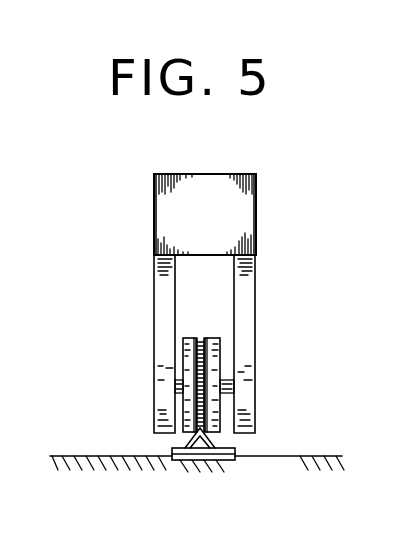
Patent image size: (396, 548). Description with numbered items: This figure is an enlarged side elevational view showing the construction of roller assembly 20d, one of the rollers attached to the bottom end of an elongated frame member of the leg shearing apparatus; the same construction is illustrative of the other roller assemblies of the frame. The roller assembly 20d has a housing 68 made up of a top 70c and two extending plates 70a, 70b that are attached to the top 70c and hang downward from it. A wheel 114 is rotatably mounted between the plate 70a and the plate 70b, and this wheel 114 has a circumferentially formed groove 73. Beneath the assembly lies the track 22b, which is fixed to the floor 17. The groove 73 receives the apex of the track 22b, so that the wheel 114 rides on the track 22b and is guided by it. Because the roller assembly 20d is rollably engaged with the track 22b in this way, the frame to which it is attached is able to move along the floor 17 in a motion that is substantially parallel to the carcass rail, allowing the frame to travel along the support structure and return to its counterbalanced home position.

The floor 17 is at (300, 452).
The roller assembly 20d is at (274, 258).
The track 22b is at (197, 457).
The housing 68 is at (256, 206).
The extending plate 70a is at (157, 313).
The extending plate 70b is at (245, 303).
The top 70c is at (225, 174).
The groove 73 is at (199, 340).
The wheel 114 is at (217, 355).